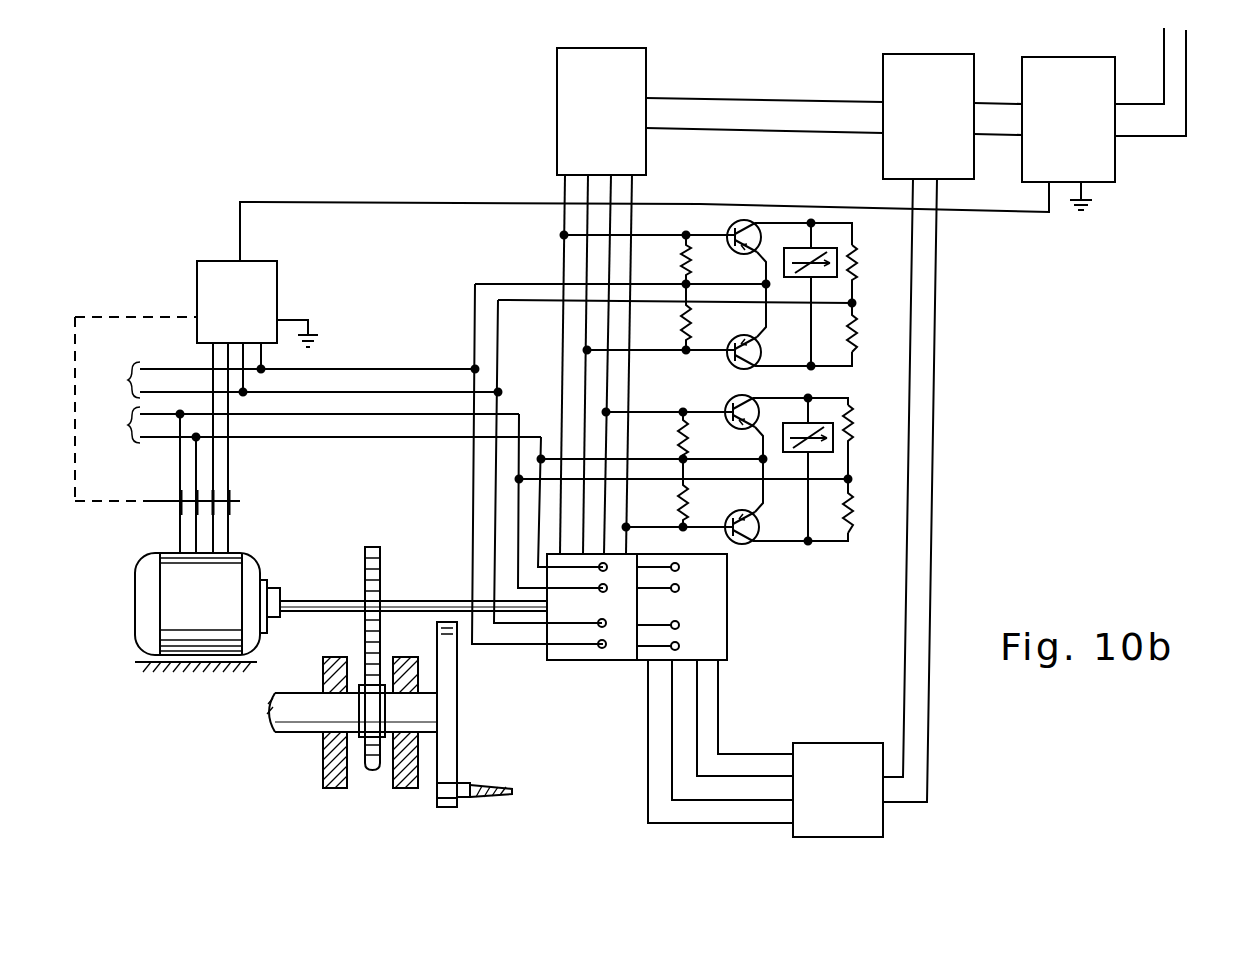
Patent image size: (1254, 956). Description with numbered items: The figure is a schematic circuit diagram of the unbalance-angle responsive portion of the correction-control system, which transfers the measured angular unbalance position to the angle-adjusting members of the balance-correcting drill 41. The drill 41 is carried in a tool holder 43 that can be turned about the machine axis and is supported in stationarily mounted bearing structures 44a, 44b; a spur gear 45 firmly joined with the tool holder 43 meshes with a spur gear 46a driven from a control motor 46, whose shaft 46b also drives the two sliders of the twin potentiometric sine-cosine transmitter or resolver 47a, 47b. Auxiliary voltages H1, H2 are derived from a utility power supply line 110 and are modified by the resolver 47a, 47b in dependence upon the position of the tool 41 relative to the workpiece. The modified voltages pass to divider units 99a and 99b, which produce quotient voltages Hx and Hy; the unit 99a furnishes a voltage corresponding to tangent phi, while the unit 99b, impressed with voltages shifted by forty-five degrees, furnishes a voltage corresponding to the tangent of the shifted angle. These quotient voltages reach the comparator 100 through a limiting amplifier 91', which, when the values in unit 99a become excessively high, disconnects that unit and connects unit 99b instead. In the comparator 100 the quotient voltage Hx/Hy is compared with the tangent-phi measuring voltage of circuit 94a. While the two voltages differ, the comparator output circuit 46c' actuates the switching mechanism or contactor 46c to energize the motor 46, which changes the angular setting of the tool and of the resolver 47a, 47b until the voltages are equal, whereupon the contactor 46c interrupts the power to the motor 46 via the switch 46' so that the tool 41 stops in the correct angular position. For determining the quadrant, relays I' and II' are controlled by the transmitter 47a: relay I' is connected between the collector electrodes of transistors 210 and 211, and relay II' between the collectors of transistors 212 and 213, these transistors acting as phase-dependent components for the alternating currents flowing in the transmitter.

The divider unit 99a is at (557, 58).
The limiting amplifier 91' is at (906, 424).
The comparator 100 is at (1115, 93).
The circuit 94a is at (1178, 88).
The comparator output circuit 46c' is at (644, 219).
The switching mechanism 46c is at (261, 402).
The power supply line 110 is at (91, 409).
The switch 46' is at (181, 491).
The control motor 46 is at (200, 597).
The spur gear 46a is at (378, 565).
The motor shaft 46b is at (345, 600).
The spur gear 45 is at (366, 772).
The bearing structure 44a is at (333, 782).
The bearing structure 44b is at (406, 782).
The tool holder 43 is at (455, 755).
The drill 41 is at (495, 797).
The transistor 212 is at (728, 226).
The transistor 213 is at (727, 364).
The transistor 210 is at (727, 400).
The transistor 211 is at (726, 540).
The relay II' is at (666, 295).
The relay I' is at (686, 470).
The sine-cosine transmitter 47a is at (590, 660).
The sine-cosine transmitter 47b is at (717, 590).
The divider unit 99b is at (822, 727).
The auxiliary voltage H1 is at (300, 380).
The auxiliary voltage H2 is at (319, 480).
The quotient voltage Hx is at (705, 112).
The quotient voltage Hy is at (920, 735).